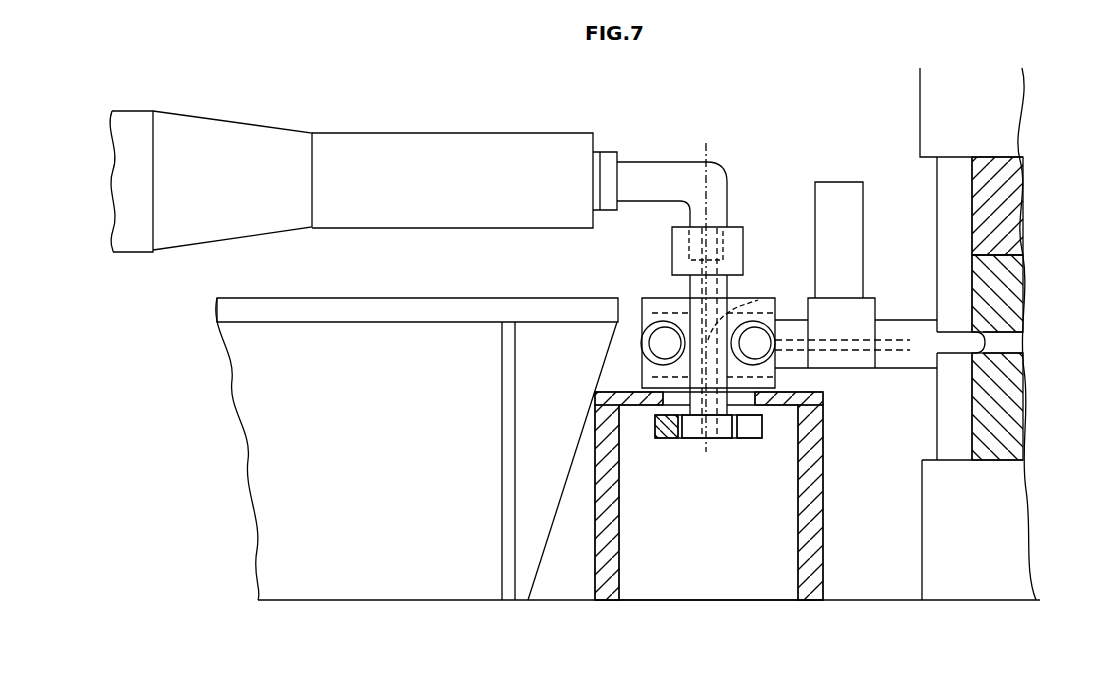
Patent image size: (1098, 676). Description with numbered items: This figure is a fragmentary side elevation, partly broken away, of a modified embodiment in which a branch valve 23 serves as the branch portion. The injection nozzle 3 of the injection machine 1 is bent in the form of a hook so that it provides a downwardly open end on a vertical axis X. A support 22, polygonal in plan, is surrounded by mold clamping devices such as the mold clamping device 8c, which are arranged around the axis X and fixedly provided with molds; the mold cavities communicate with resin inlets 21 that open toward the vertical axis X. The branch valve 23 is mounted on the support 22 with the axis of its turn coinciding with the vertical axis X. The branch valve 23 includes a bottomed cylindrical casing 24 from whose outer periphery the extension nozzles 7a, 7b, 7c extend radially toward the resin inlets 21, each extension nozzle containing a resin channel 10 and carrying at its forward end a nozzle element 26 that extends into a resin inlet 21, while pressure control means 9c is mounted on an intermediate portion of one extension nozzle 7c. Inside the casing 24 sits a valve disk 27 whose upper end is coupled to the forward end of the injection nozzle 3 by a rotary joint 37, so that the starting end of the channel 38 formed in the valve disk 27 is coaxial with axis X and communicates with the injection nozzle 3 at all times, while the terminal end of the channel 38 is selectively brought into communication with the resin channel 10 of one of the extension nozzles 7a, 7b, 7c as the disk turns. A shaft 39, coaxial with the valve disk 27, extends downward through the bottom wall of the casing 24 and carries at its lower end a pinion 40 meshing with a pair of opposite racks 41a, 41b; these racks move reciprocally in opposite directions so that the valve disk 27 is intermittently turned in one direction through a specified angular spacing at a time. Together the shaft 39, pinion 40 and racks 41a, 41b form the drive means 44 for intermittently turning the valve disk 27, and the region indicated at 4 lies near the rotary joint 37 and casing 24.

The injection machine 1 is at (448, 132).
The injection nozzle 3 is at (650, 163).
The passage 4 is at (755, 281).
The extension nozzle 7a is at (675, 312).
The extension nozzle 7b is at (743, 362).
The extension nozzle 7c is at (903, 368).
The mold clamping device 8c is at (1030, 203).
The pressure control means 9c is at (858, 188).
The resin channel 10 is at (899, 330).
The resin inlet 21 is at (1012, 341).
The support 22 is at (810, 514).
The branch valve 23 is at (637, 303).
The casing 24 is at (650, 382).
The nozzle element 26 is at (957, 352).
The valve disk 27 is at (641, 372).
The rotary joint 37 is at (745, 233).
The channel 38 is at (760, 300).
The shaft 39 is at (695, 406).
The pinion 40 is at (718, 429).
The rack 41a is at (660, 436).
The rack 41b is at (750, 431).
The drive means 44 is at (698, 472).
The vertical axis X is at (712, 152).